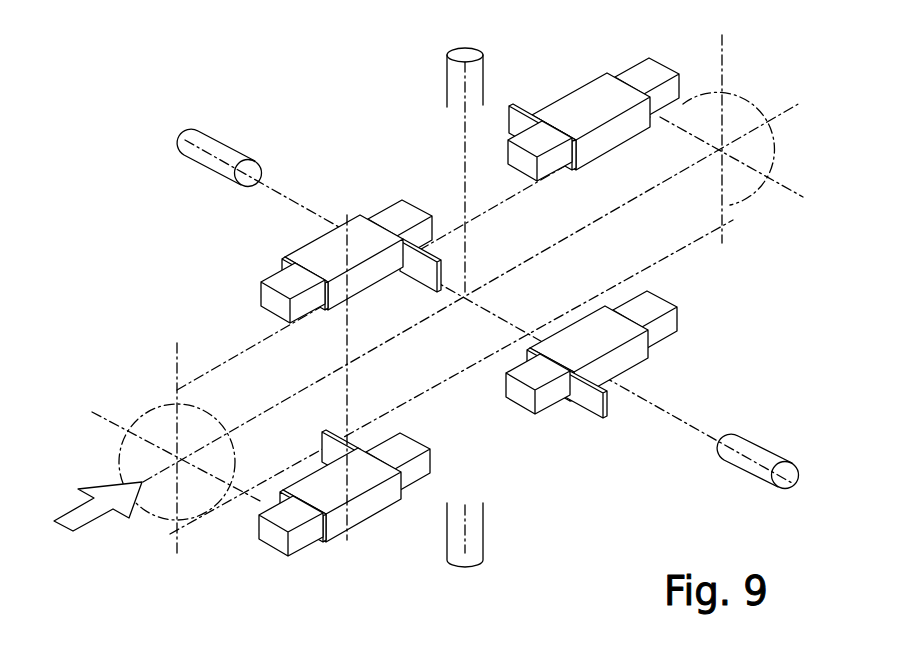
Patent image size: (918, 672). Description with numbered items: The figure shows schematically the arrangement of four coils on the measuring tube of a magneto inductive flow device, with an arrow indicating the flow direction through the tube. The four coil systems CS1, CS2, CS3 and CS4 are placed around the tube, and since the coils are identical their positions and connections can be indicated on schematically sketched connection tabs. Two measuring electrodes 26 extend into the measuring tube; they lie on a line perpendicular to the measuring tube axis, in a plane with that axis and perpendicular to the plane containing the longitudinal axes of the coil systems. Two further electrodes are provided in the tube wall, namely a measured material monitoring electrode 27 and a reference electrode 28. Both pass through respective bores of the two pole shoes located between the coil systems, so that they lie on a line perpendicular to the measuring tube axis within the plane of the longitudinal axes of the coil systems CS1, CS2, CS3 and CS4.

The measuring electrode 26 is at (228, 152).
The measured material monitoring electrode 27 is at (479, 72).
The reference electrode 28 is at (484, 519).
The coil system CS1 is at (598, 95).
The coil system CS2 is at (322, 259).
The coil system CS3 is at (623, 337).
The coil system CS4 is at (373, 482).